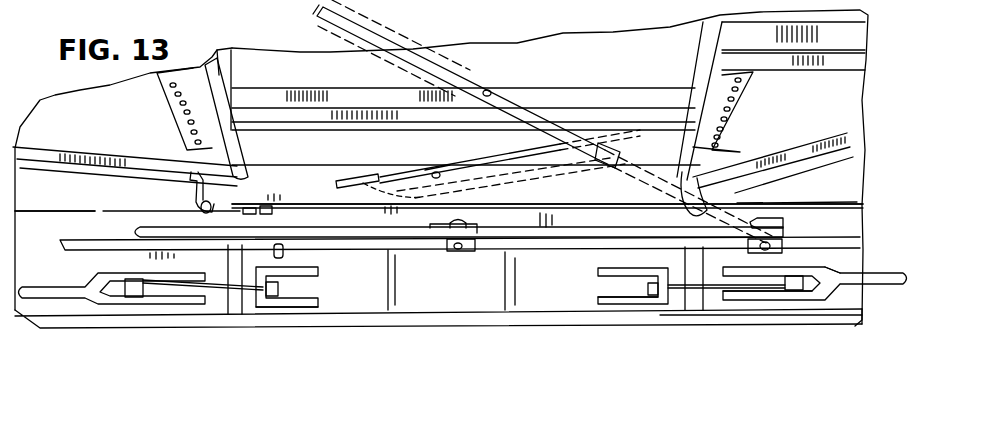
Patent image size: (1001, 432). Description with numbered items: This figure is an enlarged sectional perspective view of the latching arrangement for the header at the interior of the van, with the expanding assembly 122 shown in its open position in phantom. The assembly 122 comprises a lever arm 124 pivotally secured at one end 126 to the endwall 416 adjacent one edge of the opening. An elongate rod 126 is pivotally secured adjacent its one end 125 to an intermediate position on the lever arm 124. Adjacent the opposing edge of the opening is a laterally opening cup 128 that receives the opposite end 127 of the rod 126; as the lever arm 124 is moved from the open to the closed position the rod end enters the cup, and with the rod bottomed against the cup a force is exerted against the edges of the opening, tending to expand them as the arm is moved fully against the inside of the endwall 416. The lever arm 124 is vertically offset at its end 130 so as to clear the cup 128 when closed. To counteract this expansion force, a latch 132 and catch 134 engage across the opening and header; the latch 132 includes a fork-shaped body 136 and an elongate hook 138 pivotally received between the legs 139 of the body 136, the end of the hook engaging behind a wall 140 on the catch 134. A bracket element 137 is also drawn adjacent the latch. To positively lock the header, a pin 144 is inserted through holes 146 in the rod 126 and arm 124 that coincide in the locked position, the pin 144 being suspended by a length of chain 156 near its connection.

The expanding assembly 122 is at (583, 106).
The lever arm 124 is at (527, 237).
The one end of rod 125 is at (603, 172).
The elongate rod 126 is at (413, 167).
The opposite end of rod 127 is at (200, 187).
The laterally opening cup 128 is at (137, 228).
The vertically offset end of lever arm 130 is at (128, 256).
The latch 132 is at (157, 326).
The catch 134 is at (636, 312).
The fork-shaped body 136 is at (837, 270).
The bracket 137 is at (290, 320).
The elongate hook 138 is at (697, 283).
The legs of fork-shaped body 139 is at (748, 293).
The wall 140 is at (282, 300).
The pin 144 is at (285, 255).
The holes 146 is at (488, 90).
The length of chain 156 is at (267, 217).
The endwall 416 is at (857, 297).